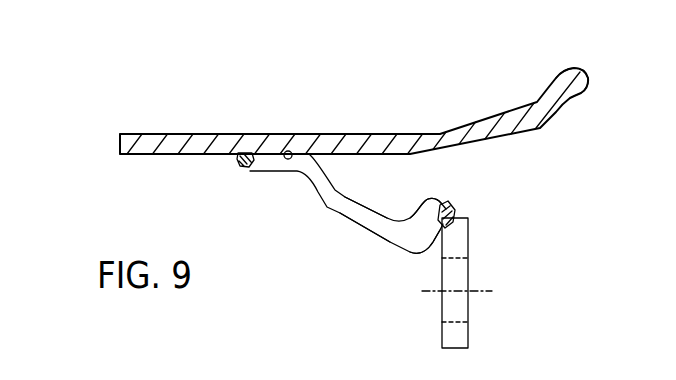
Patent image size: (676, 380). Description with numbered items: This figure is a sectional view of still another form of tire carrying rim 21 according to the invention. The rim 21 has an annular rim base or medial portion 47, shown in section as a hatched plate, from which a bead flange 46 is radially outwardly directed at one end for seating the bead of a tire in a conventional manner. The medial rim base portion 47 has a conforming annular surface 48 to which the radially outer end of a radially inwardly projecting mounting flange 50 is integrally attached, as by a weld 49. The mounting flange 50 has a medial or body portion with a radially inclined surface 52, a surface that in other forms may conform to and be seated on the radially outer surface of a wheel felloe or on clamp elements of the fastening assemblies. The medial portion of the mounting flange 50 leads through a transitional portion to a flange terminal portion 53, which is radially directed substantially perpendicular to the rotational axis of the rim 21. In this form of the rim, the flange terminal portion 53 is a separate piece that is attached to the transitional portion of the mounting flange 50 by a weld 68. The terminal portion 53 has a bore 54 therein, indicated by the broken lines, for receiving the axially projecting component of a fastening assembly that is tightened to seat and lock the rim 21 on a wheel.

The tire carrying rim 21 is at (289, 101).
The bead flange 46 is at (548, 85).
The annular rim base 47 is at (182, 133).
The conforming annular surface 48 is at (289, 152).
The weld 49 is at (245, 166).
The mounting flange 50 is at (418, 180).
The radially inclined surface 52 is at (380, 237).
The flange terminal portion 53 is at (463, 338).
The bore 54 is at (468, 267).
The weld 68 is at (449, 207).